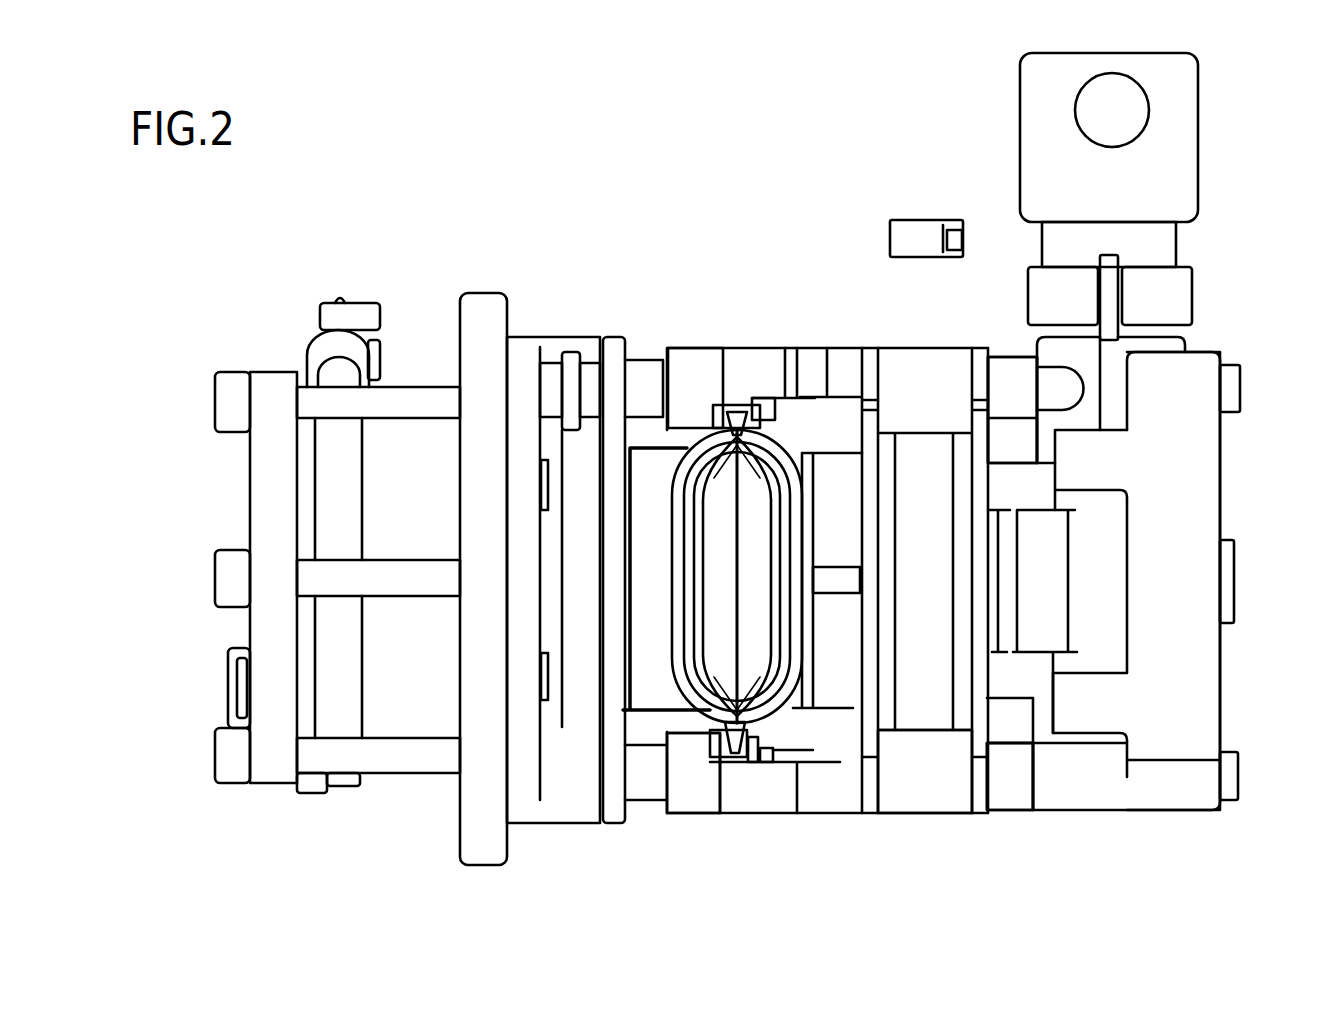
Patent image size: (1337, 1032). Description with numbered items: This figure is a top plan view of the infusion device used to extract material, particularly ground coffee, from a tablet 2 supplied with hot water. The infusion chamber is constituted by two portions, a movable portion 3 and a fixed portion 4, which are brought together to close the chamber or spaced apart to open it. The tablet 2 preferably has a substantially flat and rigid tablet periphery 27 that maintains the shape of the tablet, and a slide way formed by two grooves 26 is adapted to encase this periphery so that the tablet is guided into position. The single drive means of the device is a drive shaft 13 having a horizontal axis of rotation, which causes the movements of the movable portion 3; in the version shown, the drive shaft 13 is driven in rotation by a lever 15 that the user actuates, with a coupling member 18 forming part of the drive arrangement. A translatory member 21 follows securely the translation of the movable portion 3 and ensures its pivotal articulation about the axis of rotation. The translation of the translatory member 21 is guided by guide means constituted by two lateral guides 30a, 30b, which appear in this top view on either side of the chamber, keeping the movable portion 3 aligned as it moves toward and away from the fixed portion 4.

The tablet 2 is at (718, 665).
The movable portion 3 is at (808, 453).
The fixed portion 4 is at (652, 480).
The drive shaft 13 is at (1175, 345).
The lever 15 is at (1120, 117).
The coupling member 18 is at (1163, 245).
The translatory member 21 is at (923, 792).
The groove 26 is at (738, 767).
The tablet periphery 27 is at (703, 432).
The lateral guide 30a is at (1005, 380).
The lateral guide 30b is at (1010, 792).